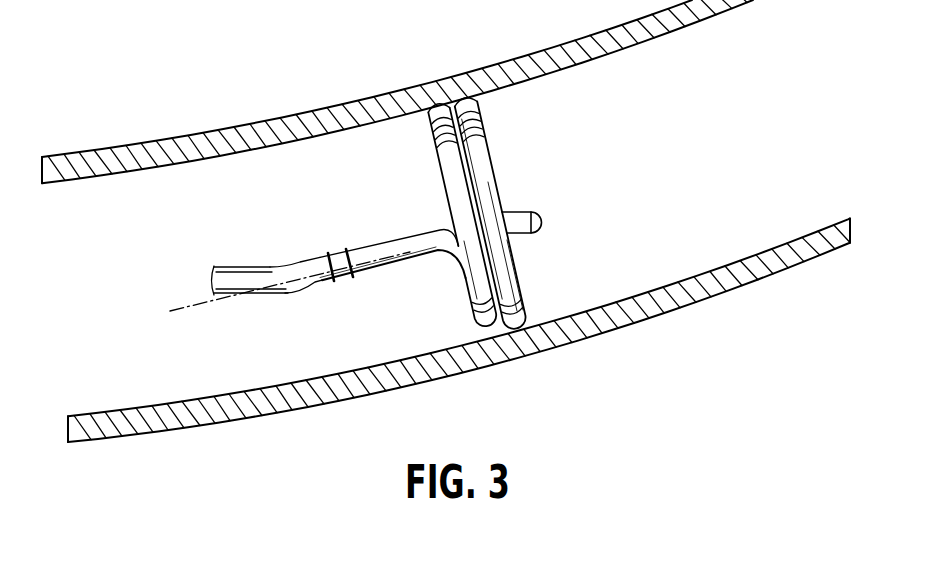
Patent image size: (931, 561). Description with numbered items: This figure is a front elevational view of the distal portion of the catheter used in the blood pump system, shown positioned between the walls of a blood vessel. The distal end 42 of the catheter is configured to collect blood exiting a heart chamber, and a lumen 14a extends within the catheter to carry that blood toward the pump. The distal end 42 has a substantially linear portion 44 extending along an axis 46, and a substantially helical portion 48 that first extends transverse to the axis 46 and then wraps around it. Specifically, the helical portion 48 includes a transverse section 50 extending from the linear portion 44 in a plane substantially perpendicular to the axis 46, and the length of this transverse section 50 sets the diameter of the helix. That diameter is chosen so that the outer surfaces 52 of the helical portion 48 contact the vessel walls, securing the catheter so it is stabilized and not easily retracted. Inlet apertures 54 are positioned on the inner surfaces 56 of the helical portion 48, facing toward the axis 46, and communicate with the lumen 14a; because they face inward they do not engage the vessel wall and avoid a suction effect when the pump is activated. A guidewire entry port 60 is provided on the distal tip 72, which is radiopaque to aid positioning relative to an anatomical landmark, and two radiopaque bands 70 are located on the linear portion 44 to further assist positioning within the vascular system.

The lumen 14a is at (228, 281).
The distal end 42 is at (513, 184).
The substantially linear portion 44 is at (308, 262).
The axis 46 is at (398, 252).
The substantially helical portion 48 is at (489, 148).
The transverse section 50 is at (465, 282).
The outer surfaces 52 is at (433, 108).
The inlet apertures 54 is at (517, 283).
The inner surfaces 56 is at (508, 257).
The guidewire entry port 60 is at (543, 221).
The radiopaque bands 70 is at (327, 256).
The distal tip 72 is at (533, 211).